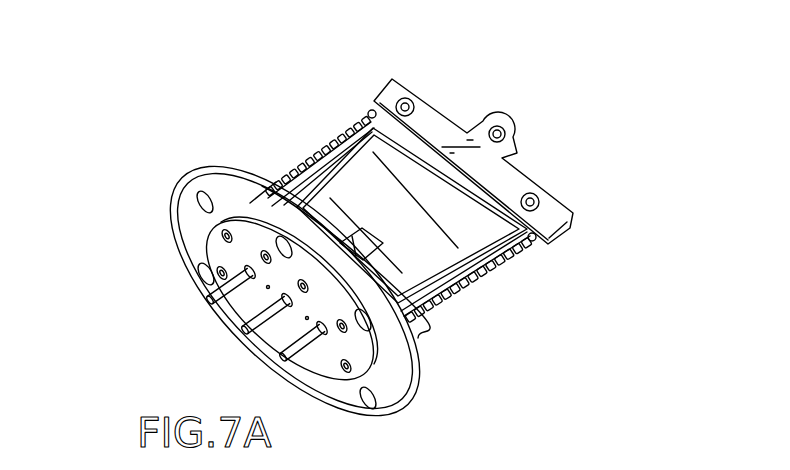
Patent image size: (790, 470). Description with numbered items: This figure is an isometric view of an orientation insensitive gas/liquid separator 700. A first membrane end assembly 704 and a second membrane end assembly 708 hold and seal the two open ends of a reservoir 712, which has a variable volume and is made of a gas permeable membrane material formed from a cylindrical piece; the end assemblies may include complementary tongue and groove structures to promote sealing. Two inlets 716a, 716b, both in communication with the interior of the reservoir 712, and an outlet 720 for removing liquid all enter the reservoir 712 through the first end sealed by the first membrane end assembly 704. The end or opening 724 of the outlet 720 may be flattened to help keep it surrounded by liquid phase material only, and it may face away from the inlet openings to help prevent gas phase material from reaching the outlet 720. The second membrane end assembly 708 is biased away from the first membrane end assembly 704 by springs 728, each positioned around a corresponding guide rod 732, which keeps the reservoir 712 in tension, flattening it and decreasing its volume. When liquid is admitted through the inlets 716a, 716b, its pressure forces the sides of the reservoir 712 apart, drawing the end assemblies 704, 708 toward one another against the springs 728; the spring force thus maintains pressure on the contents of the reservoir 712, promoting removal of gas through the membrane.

The orientation insensitive gas/liquid separator 700 is at (546, 67).
The first membrane end assembly 704 is at (202, 238).
The second membrane end assembly 708 is at (518, 185).
The reservoir 712 is at (520, 250).
The inlet 716a is at (207, 302).
The inlet 716b is at (290, 362).
The outlet 720 is at (247, 333).
The opening of the outlet 724 is at (366, 232).
The springs 728 is at (268, 182).
The guide rod 732 is at (366, 114).